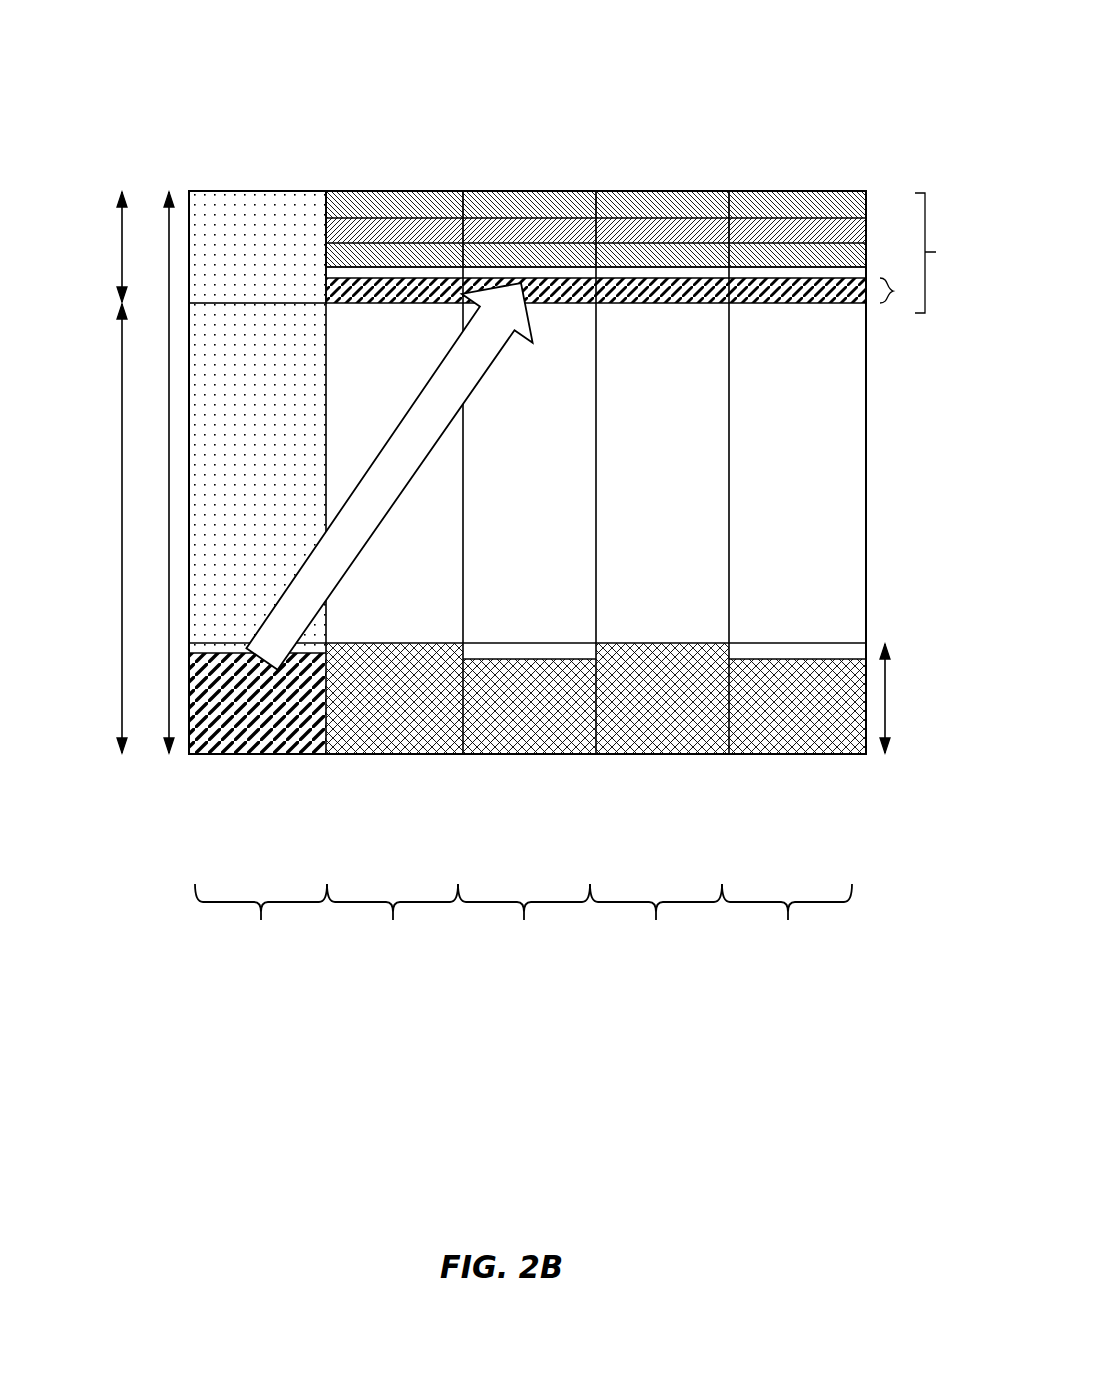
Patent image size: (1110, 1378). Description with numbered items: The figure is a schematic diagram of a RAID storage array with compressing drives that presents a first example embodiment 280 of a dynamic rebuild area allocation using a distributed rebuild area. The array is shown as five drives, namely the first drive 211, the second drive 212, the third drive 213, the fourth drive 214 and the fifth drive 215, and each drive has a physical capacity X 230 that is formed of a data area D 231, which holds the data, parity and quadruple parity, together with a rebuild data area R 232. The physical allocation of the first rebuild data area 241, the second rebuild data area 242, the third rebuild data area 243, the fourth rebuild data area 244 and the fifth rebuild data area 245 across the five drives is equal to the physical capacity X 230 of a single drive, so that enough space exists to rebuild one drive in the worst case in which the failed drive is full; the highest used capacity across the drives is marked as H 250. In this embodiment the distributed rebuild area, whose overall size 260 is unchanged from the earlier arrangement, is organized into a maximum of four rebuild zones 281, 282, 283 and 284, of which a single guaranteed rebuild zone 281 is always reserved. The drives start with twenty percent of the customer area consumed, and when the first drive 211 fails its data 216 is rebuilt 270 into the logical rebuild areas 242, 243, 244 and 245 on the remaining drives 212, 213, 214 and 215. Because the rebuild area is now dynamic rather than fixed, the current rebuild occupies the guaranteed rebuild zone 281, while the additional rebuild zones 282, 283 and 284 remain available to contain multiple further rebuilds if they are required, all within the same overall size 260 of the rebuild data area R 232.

The first example embodiment 280 is at (244, 70).
The rebuild zone 284 is at (867, 191).
The rebuild zone 283 is at (868, 230).
The rebuild zone 282 is at (868, 253).
The guaranteed rebuild zone 281 is at (913, 277).
The overall size 260 is at (935, 252).
The rebuild data area rr1 241 is at (253, 233).
The rebuild data area rr2 242 is at (392, 192).
The rebuild data area rr3 243 is at (523, 192).
The rebuild data area rr4 244 is at (662, 192).
The rebuild data area rr5 245 is at (762, 192).
The rebuild data area R 232 is at (92, 247).
The data area D 231 is at (100, 523).
The physical capacity X 230 is at (146, 418).
The data 216 is at (269, 725).
The highest used capacity H 250 is at (915, 703).
The rebuild 270 is at (389, 476).
The drive D1 211 is at (261, 867).
The drive D2 212 is at (392, 867).
The drive D3 213 is at (524, 867).
The drive D4 214 is at (656, 867).
The drive D5 215 is at (787, 867).